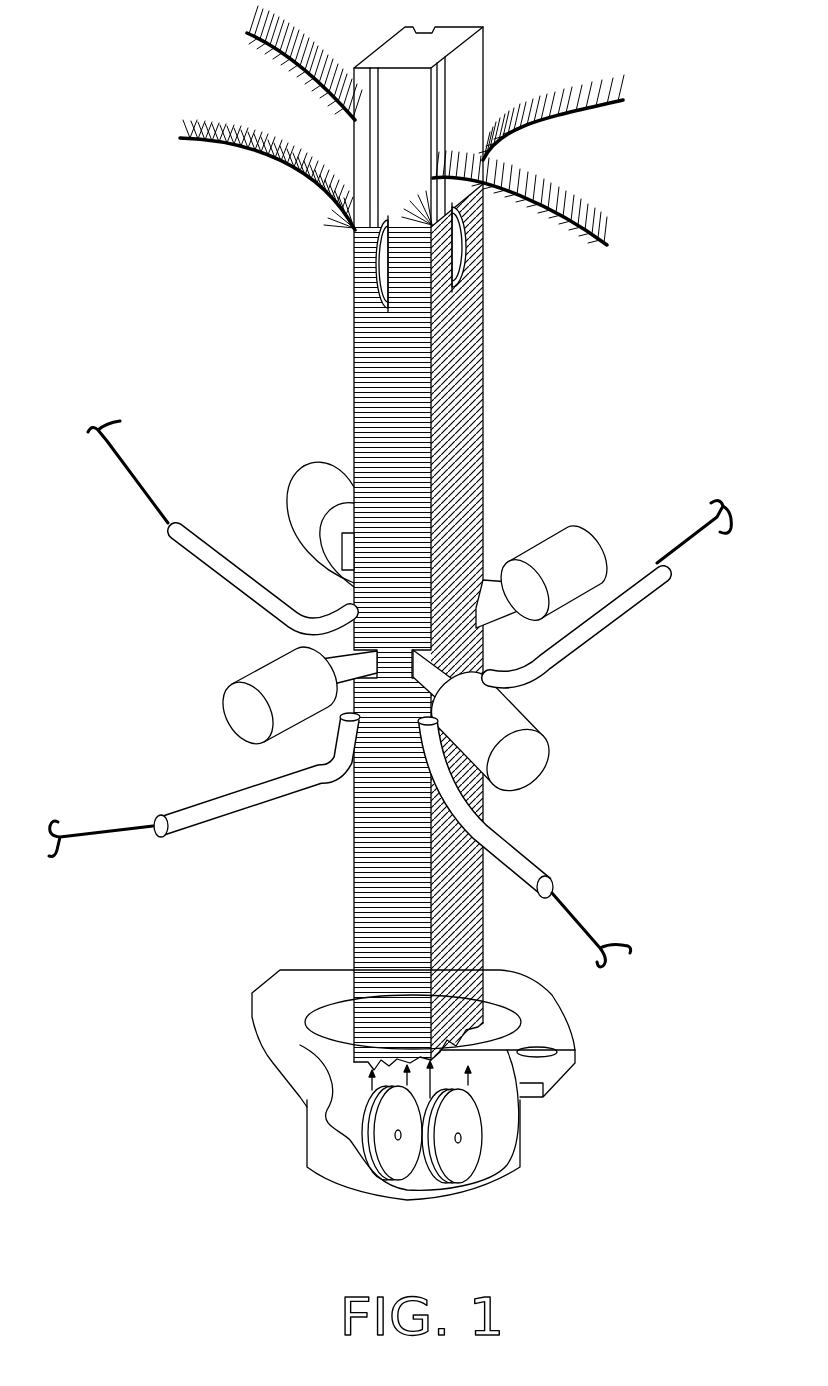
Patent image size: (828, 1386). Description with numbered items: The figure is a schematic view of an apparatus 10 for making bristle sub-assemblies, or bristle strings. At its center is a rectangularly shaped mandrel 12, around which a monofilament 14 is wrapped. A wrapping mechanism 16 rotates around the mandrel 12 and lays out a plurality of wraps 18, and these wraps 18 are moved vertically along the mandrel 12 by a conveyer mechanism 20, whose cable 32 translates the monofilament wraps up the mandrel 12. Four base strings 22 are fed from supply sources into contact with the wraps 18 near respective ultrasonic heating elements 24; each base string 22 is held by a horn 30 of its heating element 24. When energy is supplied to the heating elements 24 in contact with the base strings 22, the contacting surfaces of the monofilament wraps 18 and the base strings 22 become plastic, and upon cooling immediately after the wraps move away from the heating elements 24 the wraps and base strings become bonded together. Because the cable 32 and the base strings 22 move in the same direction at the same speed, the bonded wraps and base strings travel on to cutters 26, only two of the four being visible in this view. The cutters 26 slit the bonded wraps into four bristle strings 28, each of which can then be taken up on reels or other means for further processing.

The apparatus 10 is at (390, 601).
The mandrel 12 is at (483, 36).
The monofilament 14 is at (505, 1052).
The wrapping mechanism 16 is at (565, 1068).
The wraps 18 is at (344, 887).
The conveyer mechanism 20 is at (346, 1107).
The base strings 22 is at (133, 470).
The heating elements 24 is at (310, 467).
The cutters 26 is at (380, 265).
The bristle strings 28 is at (247, 33).
The horn 30 is at (495, 585).
The cable 32 is at (505, 1130).